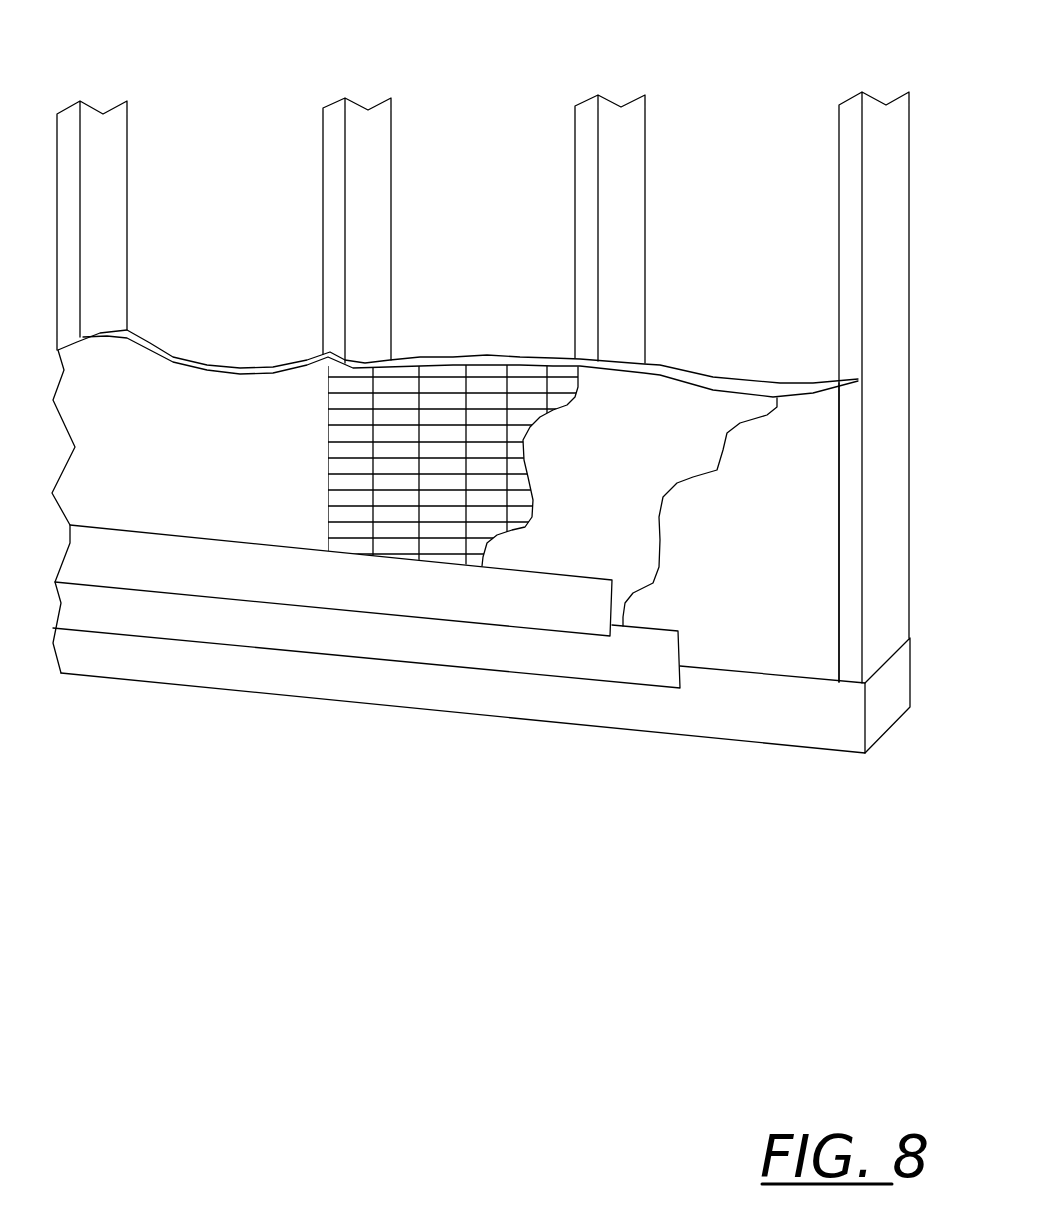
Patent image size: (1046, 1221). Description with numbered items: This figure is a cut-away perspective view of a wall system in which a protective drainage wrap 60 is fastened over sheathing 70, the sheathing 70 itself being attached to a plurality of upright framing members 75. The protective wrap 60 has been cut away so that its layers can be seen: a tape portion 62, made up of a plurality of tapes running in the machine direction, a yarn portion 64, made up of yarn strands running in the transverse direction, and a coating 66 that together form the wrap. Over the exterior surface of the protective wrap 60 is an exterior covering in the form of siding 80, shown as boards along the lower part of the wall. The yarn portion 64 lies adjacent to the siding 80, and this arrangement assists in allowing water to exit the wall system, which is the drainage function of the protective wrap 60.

The framing members 75 is at (106, 100).
The protective drainage wrap 60 is at (534, 339).
The tape portion 62 is at (443, 392).
The yarn portion 64 is at (505, 387).
The coating portion 66 is at (588, 497).
The sheathing 70 is at (737, 567).
The siding 80 is at (198, 583).